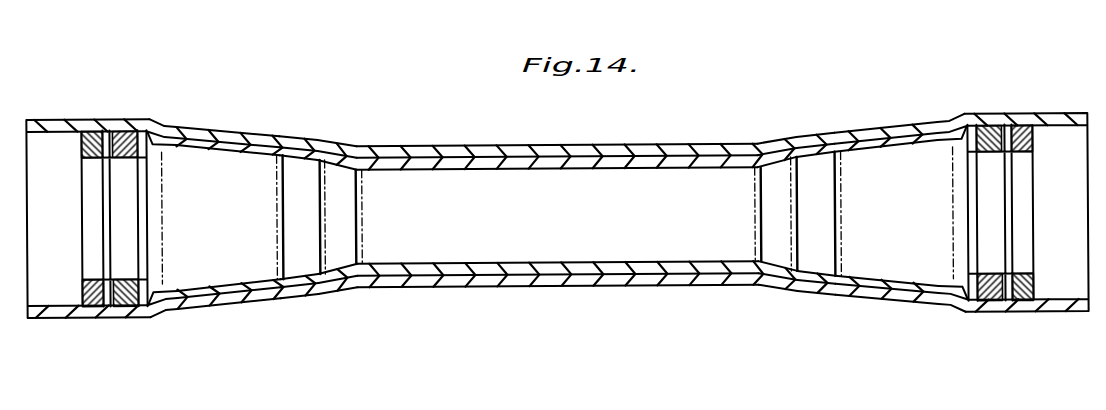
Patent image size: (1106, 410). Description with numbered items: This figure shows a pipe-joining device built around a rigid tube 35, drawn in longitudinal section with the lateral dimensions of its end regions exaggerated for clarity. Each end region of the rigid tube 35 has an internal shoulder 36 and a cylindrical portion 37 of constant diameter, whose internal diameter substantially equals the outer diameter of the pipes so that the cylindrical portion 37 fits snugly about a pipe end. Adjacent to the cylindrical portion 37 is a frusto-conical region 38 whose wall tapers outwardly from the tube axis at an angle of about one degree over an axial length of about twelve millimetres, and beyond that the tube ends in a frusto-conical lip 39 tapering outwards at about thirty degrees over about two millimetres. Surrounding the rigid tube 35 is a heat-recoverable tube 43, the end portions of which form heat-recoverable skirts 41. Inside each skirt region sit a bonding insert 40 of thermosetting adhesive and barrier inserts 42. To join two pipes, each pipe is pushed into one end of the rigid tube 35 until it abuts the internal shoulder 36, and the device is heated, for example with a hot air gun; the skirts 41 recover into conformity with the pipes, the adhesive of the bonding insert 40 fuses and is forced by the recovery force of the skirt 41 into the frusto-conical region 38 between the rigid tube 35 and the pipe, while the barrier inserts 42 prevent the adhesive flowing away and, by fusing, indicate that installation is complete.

The rigid tube 35 is at (463, 268).
The internal shoulder 36 is at (340, 157).
The cylindrical portion 37 is at (297, 153).
The frusto-conical region 38 is at (223, 145).
The frusto-conical lip 39 is at (163, 132).
The bonding insert 40 is at (123, 175).
The heat-recoverable skirt 41 is at (67, 310).
The barrier insert 42 is at (95, 132).
The heat-recoverable tube 43 is at (508, 148).